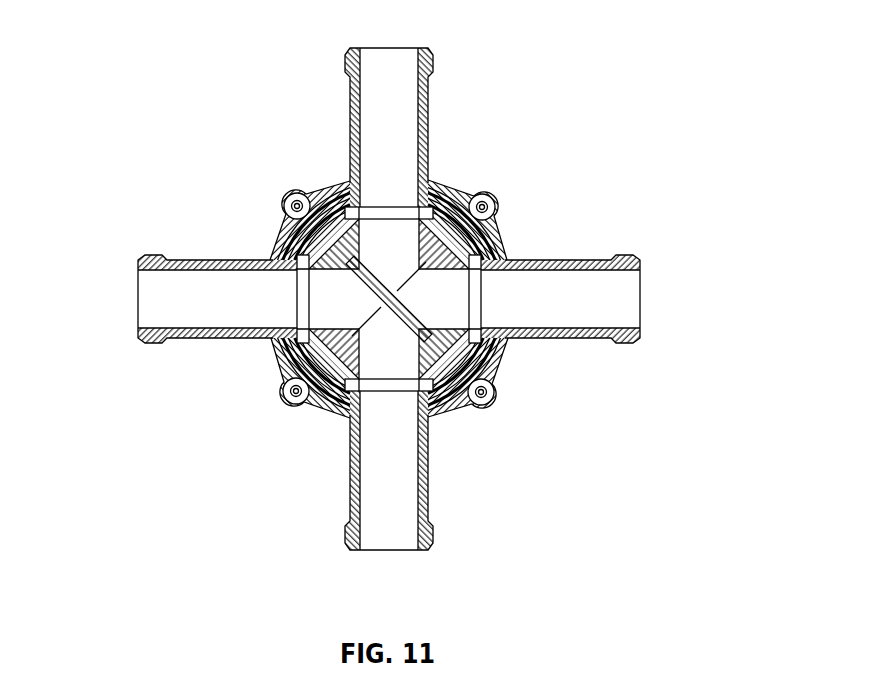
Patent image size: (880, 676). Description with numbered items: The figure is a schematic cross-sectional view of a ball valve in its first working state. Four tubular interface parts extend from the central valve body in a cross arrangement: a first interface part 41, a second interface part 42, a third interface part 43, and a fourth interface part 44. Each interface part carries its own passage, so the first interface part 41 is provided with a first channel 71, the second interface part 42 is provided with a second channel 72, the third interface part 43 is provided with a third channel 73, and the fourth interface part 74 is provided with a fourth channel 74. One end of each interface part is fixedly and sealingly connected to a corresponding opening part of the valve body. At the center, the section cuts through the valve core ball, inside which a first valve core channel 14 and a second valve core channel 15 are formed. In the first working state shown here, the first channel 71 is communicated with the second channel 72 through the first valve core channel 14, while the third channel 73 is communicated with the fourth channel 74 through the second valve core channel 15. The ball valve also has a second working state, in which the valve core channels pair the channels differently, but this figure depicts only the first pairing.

The first valve core channel 14 is at (440, 285).
The second valve core channel 15 is at (318, 398).
The first interface part 41 is at (582, 337).
The second interface part 42 is at (426, 101).
The third interface part 43 is at (197, 337).
The fourth interface part 44 is at (427, 488).
The first channel 71 is at (615, 303).
The second channel 72 is at (408, 155).
The third channel 73 is at (160, 300).
The fourth channel 74 is at (403, 520).